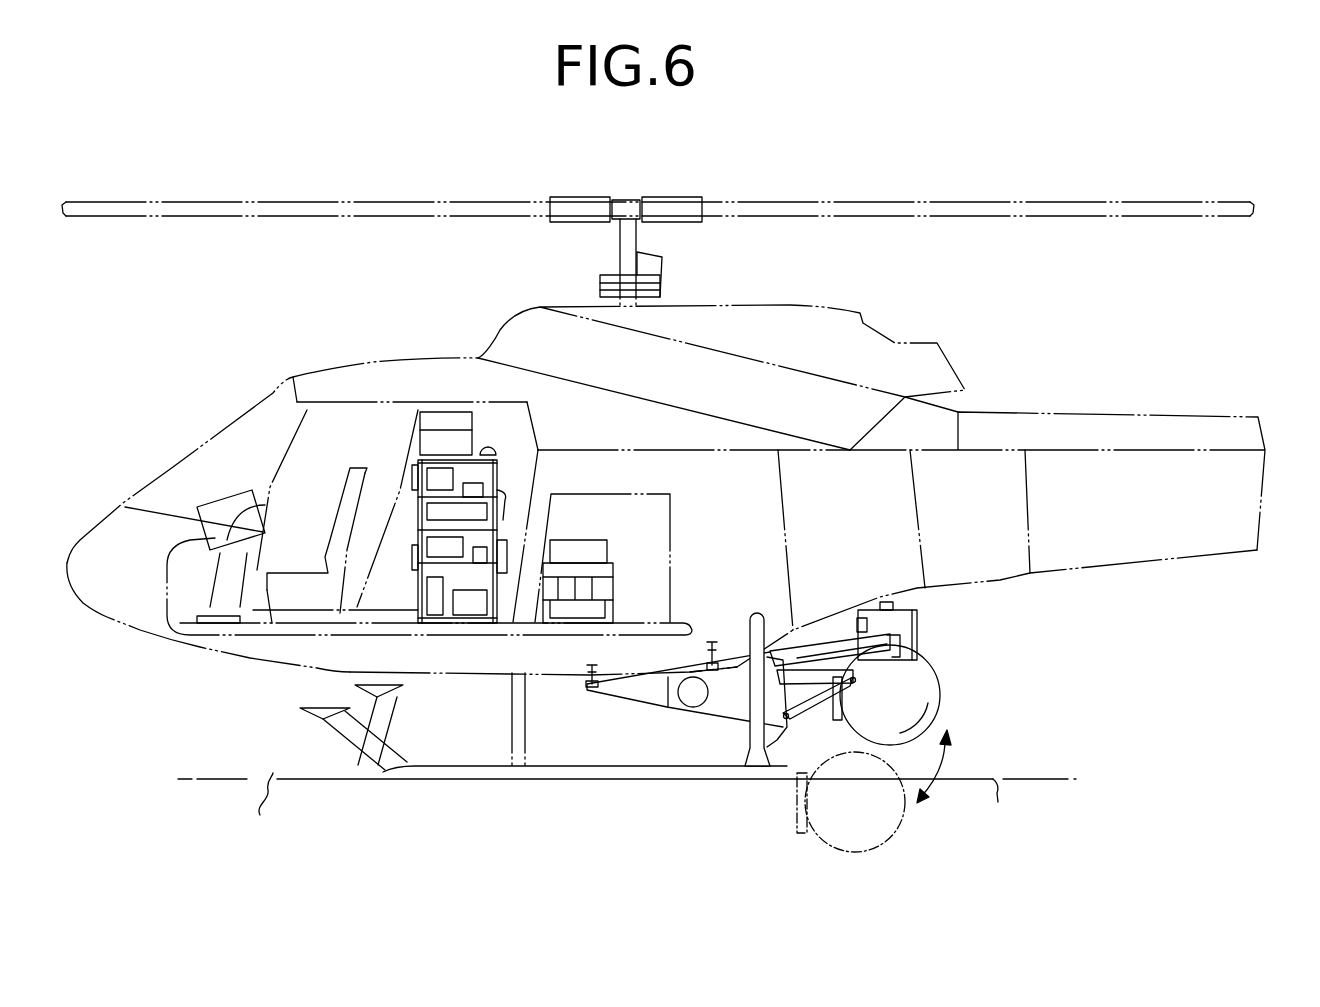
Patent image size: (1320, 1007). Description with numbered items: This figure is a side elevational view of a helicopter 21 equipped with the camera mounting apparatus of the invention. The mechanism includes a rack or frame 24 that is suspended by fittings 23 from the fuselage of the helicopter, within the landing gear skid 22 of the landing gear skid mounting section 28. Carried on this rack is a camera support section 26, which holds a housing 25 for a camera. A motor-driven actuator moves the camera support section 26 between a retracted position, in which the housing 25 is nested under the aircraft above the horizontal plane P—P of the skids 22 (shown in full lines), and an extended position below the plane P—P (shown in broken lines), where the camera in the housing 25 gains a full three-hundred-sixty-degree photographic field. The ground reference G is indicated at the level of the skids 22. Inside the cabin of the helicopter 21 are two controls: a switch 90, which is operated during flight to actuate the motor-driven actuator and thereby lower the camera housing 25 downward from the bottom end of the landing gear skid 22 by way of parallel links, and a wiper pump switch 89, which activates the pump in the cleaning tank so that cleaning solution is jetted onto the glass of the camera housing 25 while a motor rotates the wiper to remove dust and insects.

The helicopter 21 is at (577, 197).
The landing gear skid 22 is at (355, 752).
The fittings 23 is at (590, 665).
The rack 24 is at (640, 703).
The housing 25 is at (938, 673).
The camera support section 26 is at (822, 638).
The landing gear skid mounting section 28 is at (550, 678).
The wiper pump switch 89 is at (267, 536).
The switch 90 is at (253, 508).
The horizontal plane of the skids P is at (198, 779).
The ground G is at (263, 793).